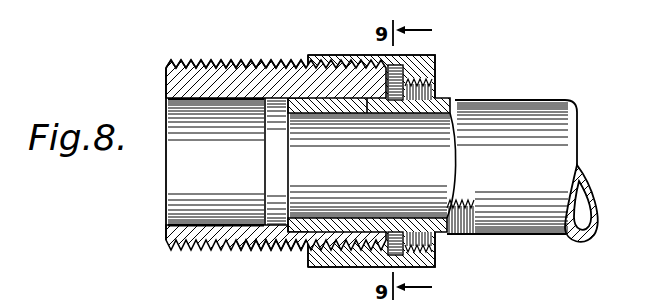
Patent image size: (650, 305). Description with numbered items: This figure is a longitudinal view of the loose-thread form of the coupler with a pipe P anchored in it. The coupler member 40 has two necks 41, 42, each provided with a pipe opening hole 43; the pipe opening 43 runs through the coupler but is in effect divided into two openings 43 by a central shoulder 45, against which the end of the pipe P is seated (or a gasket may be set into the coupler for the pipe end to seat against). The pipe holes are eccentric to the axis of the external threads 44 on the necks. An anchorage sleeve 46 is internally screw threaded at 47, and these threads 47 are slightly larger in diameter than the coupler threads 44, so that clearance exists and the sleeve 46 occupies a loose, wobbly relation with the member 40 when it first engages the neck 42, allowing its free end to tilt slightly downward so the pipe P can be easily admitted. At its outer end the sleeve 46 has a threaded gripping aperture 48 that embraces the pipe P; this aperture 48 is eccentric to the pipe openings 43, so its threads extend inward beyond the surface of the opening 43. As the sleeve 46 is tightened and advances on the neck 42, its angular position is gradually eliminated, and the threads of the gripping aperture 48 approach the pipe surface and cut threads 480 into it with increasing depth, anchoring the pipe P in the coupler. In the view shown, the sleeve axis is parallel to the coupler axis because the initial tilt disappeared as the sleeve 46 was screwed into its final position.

The coupler member 40 is at (278, 66).
The neck 41 is at (215, 68).
The neck 42 is at (338, 68).
The pipe opening hole 43 is at (367, 103).
The external threads 44 is at (240, 62).
The central shoulder 45 is at (293, 169).
The anchorage sleeve 46 is at (388, 63).
The internal screw threads 47 is at (316, 60).
The threaded gripping aperture 48 is at (423, 80).
The threads cut into pipe 480 is at (467, 207).
The pipe P is at (533, 112).